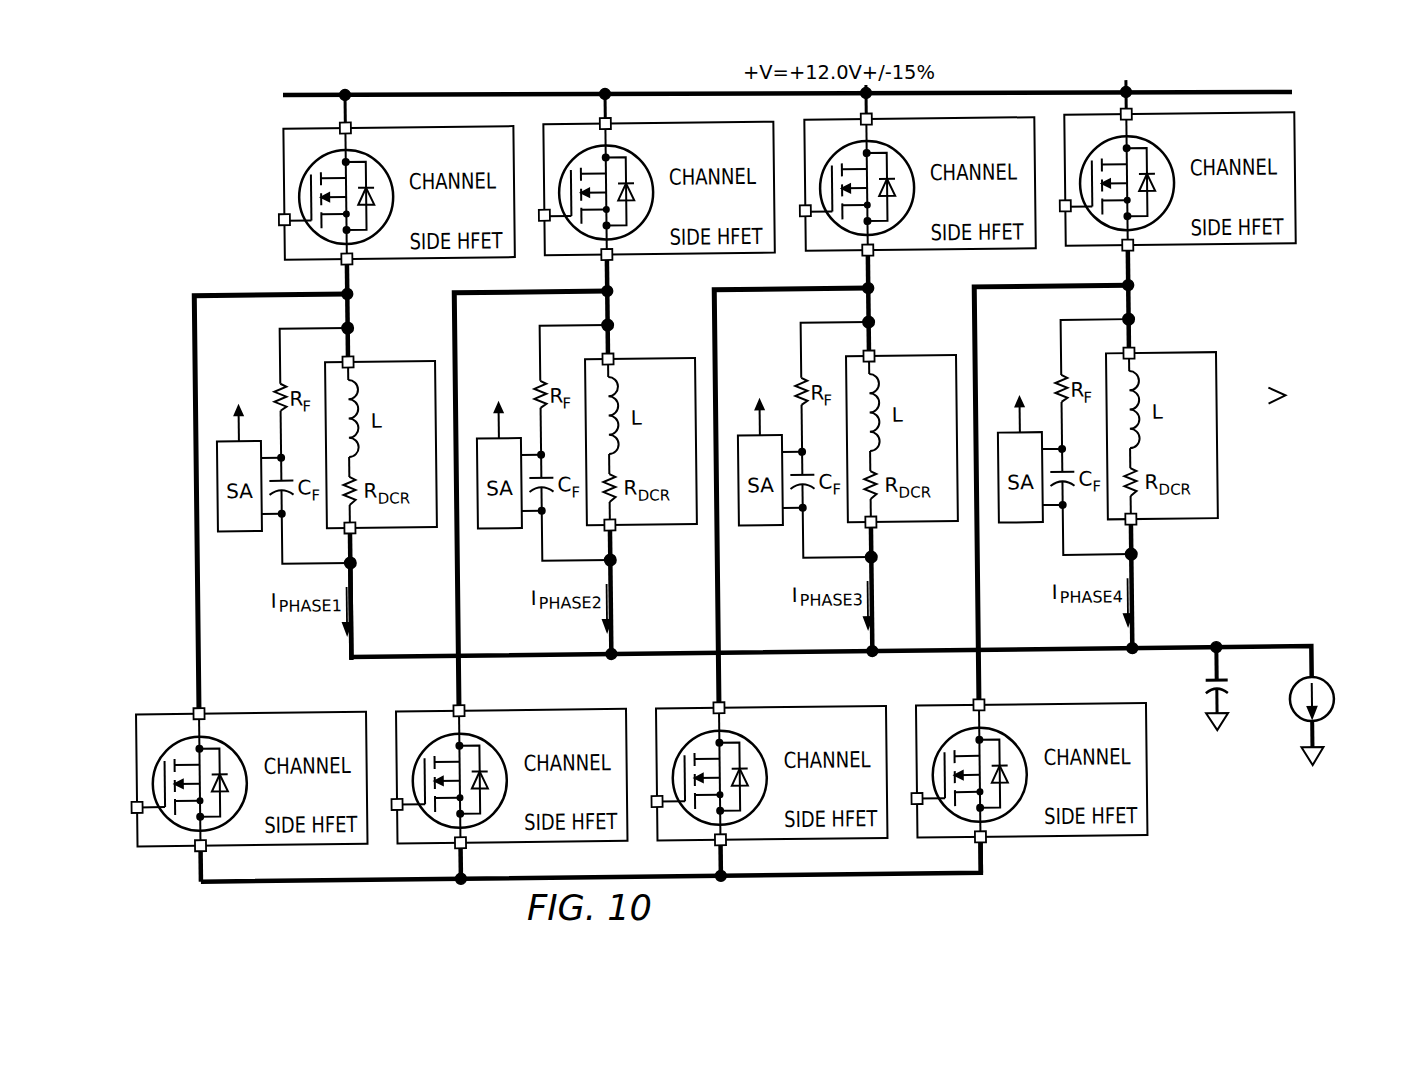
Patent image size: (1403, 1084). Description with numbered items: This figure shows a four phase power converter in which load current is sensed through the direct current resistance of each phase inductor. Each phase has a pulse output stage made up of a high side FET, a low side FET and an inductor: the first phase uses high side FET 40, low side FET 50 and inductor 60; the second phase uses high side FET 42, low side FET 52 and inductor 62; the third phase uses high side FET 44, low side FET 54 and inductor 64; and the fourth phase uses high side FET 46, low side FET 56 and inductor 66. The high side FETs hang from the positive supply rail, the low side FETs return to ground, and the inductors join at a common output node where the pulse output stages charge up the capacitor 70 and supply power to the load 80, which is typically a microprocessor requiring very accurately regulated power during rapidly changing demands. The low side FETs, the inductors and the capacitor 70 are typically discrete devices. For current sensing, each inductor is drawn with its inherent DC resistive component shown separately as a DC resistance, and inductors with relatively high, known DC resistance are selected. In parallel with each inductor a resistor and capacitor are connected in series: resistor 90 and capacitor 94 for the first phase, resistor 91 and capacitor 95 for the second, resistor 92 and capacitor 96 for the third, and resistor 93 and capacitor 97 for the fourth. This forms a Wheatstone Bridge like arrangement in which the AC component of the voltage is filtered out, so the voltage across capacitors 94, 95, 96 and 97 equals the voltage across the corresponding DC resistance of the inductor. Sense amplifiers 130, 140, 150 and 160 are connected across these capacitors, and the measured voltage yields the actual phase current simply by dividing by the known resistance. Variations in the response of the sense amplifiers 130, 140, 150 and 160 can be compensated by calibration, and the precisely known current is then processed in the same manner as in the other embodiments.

The high side FET 40 is at (383, 168).
The high side FET 42 is at (643, 166).
The high side FET 44 is at (904, 165).
The high side FET 46 is at (1164, 163).
The low side FET 50 is at (230, 753).
The low side FET 52 is at (490, 753).
The low side FET 54 is at (750, 753).
The low side FET 56 is at (1010, 753).
The inductor 60 is at (368, 401).
The inductor 62 is at (628, 401).
The inductor 64 is at (889, 401).
The inductor 66 is at (1149, 401).
The capacitor 70 is at (1225, 696).
The load 80 is at (1316, 741).
The resistor 90 is at (270, 398).
The resistor 91 is at (530, 398).
The resistor 92 is at (791, 398).
The resistor 93 is at (1051, 398).
The capacitor 94 is at (279, 478).
The capacitor 95 is at (539, 478).
The capacitor 96 is at (800, 478).
The capacitor 97 is at (1060, 478).
The sense amplifier 130 is at (237, 531).
The sense amplifier 140 is at (497, 531).
The sense amplifier 150 is at (758, 531).
The sense amplifier 160 is at (1018, 531).